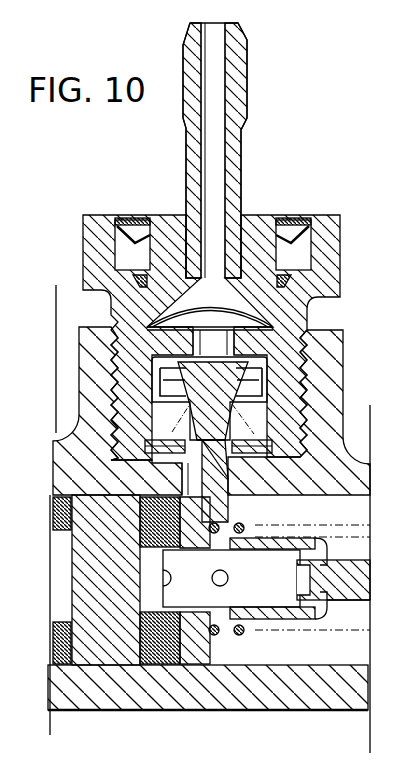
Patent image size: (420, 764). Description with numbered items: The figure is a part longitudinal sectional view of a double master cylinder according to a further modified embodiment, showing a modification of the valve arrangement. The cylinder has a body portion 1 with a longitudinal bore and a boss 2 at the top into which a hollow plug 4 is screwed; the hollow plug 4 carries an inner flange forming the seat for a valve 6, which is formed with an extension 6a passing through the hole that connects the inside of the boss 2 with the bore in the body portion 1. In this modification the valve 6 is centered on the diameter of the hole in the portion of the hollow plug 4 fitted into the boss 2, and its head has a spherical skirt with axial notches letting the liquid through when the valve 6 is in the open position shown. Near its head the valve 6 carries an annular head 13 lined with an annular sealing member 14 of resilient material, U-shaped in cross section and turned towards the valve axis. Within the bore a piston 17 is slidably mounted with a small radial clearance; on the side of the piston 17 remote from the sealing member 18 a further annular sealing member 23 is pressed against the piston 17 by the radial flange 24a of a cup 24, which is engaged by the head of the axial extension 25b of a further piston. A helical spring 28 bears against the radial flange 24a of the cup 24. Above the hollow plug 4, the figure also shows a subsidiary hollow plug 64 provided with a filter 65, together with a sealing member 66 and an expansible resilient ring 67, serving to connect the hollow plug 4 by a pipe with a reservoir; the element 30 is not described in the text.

The body portion 1 is at (313, 690).
The boss 2 is at (80, 403).
The hollow plug 4 is at (125, 315).
The valve 6 is at (165, 426).
The extension 6a is at (217, 482).
The annular head 13 is at (147, 390).
The annular sealing member 14 is at (147, 370).
The piston 17 is at (108, 657).
The sealing member 18 is at (61, 690).
The annular sealing member 23 is at (168, 663).
The cup 24 is at (280, 618).
The radial flange 24a is at (198, 657).
The axial extension 25b is at (355, 590).
The helical spring 28 is at (288, 628).
The passage 30 is at (360, 660).
The subsidiary hollow plug 64 is at (240, 168).
The filter 65 is at (231, 300).
The sealing member 66 is at (56, 285).
The expansible resilient ring 67 is at (113, 240).